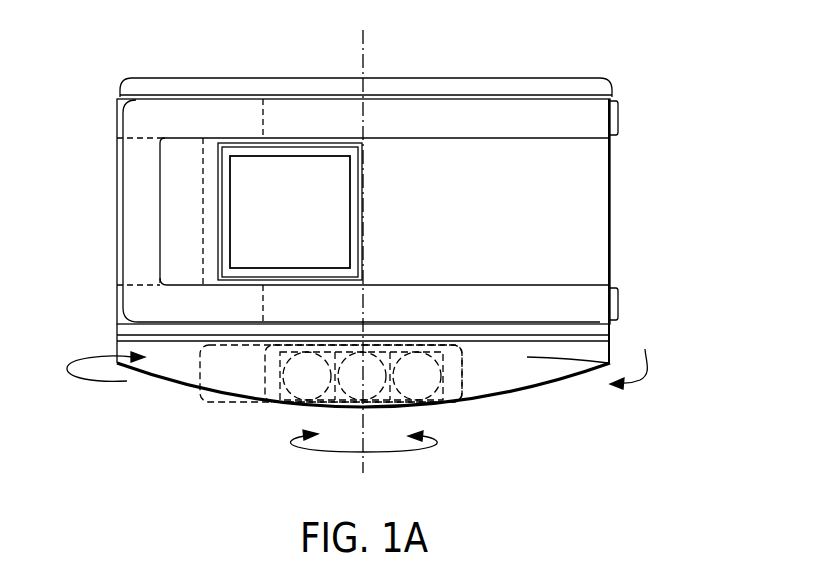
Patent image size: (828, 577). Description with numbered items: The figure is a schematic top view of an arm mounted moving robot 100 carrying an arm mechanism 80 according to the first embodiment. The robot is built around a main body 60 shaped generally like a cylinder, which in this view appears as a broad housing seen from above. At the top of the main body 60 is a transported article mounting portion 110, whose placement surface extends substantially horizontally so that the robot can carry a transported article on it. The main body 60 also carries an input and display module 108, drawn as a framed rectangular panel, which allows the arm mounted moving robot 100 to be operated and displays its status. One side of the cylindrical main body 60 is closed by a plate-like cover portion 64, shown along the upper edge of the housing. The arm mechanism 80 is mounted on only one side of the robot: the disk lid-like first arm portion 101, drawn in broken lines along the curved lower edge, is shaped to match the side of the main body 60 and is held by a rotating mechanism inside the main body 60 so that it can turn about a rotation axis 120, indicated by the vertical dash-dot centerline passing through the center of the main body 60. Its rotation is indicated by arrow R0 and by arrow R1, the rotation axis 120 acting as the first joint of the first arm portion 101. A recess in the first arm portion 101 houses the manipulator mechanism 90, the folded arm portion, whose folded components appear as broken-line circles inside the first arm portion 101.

The arm mounted moving robot 100 is at (417, 202).
The main body 60 is at (598, 190).
The plate-like cover portion 64 is at (543, 88).
The input and display module 108 is at (333, 251).
The transported article mounting portion 110 is at (140, 306).
The rotation axis 120 is at (366, 47).
The arm mechanism 80 is at (580, 398).
The first arm portion 101 is at (222, 385).
The manipulator mechanism 90 is at (420, 378).
The arrow R0 is at (378, 454).
The arrow R1 is at (363, 358).